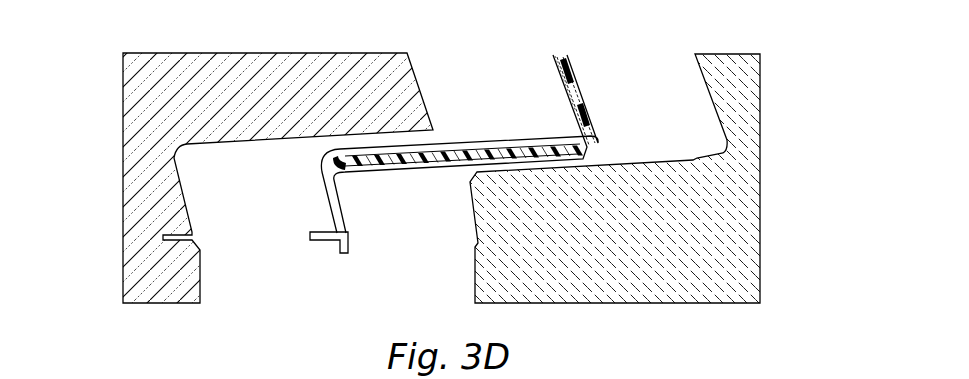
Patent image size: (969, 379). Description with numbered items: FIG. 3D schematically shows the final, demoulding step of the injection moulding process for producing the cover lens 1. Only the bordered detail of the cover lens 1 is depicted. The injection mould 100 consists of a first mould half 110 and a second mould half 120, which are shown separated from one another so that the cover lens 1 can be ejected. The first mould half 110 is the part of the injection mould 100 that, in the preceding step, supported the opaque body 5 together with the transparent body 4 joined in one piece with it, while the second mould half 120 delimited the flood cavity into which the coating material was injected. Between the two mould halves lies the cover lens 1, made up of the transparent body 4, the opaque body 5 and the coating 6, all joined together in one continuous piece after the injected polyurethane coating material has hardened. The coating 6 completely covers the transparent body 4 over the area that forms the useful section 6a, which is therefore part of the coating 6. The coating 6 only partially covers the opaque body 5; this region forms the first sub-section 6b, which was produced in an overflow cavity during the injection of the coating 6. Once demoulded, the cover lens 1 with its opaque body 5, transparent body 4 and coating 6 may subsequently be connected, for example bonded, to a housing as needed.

The injection mould 100 is at (450, 178).
The first mould half 110 is at (148, 83).
The second mould half 120 is at (743, 77).
The cover lens 1 is at (317, 260).
The transparent body 4 is at (558, 70).
The opaque body 5 is at (433, 145).
The coating 6 is at (480, 152).
The useful section 6a is at (448, 180).
The first sub-section 6b is at (353, 197).